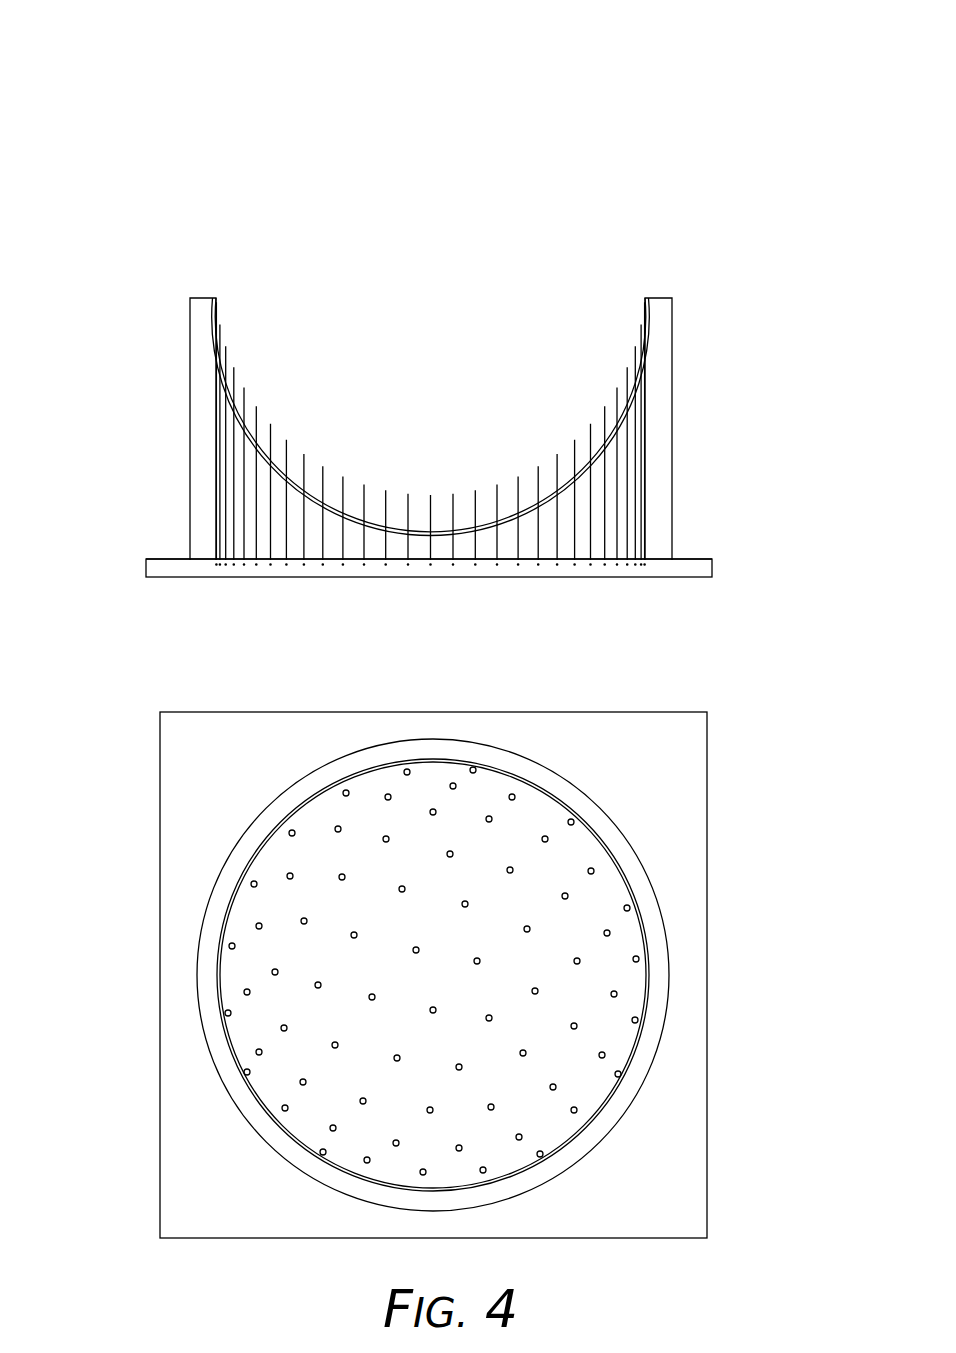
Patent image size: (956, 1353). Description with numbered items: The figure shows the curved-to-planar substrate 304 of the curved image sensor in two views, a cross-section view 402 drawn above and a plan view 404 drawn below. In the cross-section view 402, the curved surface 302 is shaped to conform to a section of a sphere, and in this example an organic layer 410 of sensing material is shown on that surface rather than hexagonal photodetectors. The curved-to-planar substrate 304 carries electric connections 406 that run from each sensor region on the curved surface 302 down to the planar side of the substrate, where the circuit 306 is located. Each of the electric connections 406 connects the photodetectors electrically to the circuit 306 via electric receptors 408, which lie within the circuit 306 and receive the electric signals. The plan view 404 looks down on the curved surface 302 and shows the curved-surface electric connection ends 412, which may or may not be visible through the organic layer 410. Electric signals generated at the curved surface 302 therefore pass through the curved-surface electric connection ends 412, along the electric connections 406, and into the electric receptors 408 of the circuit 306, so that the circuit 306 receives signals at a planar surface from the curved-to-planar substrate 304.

The curved surface 302 is at (609, 340).
The curved-to-planar substrate 304 is at (117, 57).
The circuit 306 is at (168, 569).
The cross-section view 402 is at (709, 239).
The plan view 404 is at (757, 687).
The electric connections 406 is at (247, 515).
The electric receptors 408 is at (677, 568).
The organic layer 410 is at (628, 370).
The curved-surface electric connection ends 412 is at (510, 484).